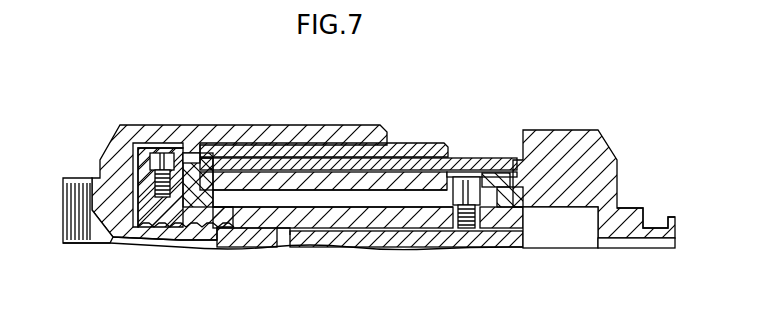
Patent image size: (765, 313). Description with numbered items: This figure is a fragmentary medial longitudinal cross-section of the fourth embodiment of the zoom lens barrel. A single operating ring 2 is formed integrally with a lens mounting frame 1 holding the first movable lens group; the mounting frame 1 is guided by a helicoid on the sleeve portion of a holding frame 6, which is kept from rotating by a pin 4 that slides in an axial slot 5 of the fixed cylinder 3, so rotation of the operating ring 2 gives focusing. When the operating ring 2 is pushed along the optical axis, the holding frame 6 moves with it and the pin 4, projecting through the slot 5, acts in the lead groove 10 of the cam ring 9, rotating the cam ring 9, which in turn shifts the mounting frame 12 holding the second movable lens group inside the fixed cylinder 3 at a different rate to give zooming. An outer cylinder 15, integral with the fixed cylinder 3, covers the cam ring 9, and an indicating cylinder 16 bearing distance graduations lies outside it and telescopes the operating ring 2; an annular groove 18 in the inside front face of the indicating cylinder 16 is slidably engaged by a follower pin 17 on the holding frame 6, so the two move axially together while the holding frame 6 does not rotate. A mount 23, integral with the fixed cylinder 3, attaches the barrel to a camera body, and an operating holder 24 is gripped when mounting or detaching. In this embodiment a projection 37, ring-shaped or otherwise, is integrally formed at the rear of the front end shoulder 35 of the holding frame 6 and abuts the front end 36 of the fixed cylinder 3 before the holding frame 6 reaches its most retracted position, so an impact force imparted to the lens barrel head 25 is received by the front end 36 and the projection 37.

The lens mounting frame 1 is at (270, 241).
The operating ring 2 is at (231, 130).
The fixed cylinder 3 is at (502, 218).
The pin 4 is at (480, 178).
The axial slot 5 is at (385, 201).
The holding frame 6 is at (425, 221).
The cam ring 9 is at (317, 180).
The lead groove 10 is at (427, 181).
The mounting frame 12 is at (333, 245).
The outer cylinder 15 is at (424, 164).
The indicating cylinder 16 is at (394, 148).
The follower pin 17 is at (148, 150).
The annular groove 18 is at (170, 156).
The mount 23 is at (655, 220).
The operating holder 24 is at (563, 143).
The lens barrel head 25 is at (78, 178).
The front end shoulder 35 is at (181, 168).
The front end 36 is at (203, 198).
The projection 37 is at (187, 200).